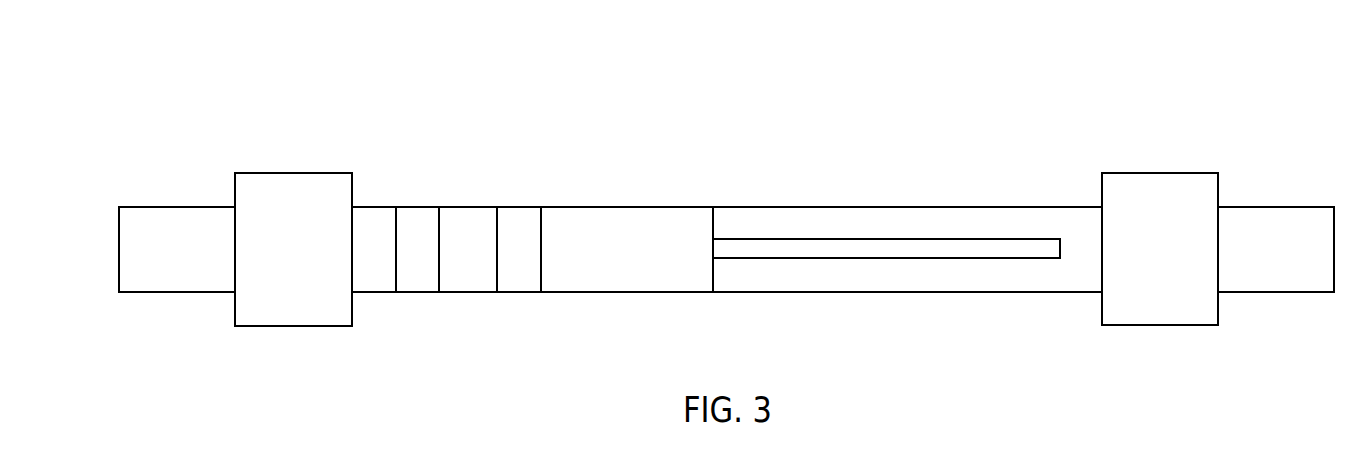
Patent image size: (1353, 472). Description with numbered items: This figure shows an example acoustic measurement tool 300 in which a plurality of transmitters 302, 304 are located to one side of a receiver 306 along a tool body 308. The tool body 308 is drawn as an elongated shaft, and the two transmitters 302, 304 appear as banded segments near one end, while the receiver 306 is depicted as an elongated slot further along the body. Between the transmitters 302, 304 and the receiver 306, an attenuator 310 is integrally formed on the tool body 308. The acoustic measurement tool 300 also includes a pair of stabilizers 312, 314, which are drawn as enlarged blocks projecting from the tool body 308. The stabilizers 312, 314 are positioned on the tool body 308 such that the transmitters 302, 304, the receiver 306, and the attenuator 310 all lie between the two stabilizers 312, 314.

The acoustic measurement tool 300 is at (207, 76).
The transmitter 302 is at (518, 293).
The transmitter 304 is at (418, 206).
The receiver 306 is at (886, 239).
The tool body 308 is at (1246, 293).
The attenuator 310 is at (627, 206).
The stabilizer 312 is at (1160, 172).
The stabilizer 314 is at (292, 172).